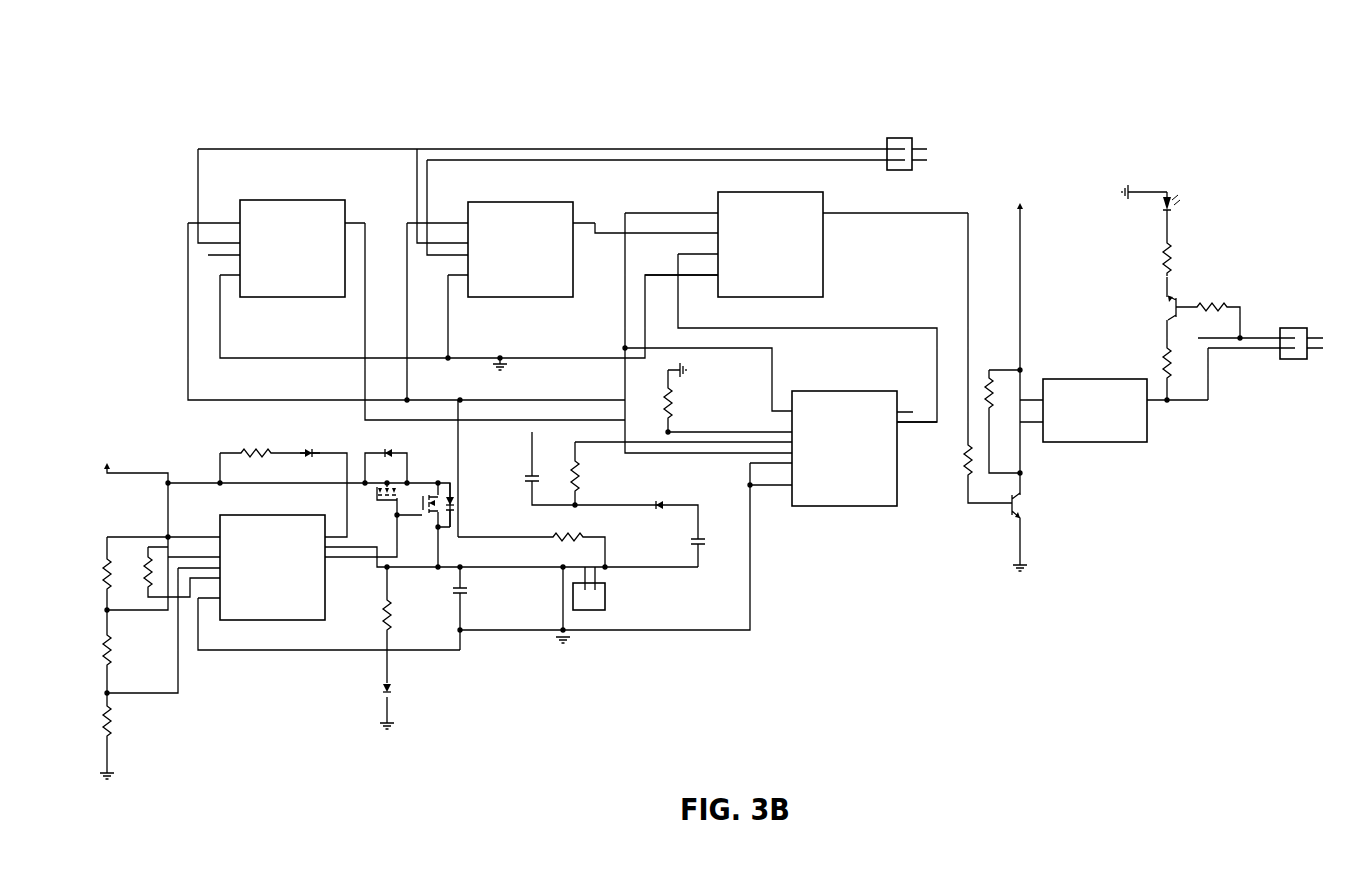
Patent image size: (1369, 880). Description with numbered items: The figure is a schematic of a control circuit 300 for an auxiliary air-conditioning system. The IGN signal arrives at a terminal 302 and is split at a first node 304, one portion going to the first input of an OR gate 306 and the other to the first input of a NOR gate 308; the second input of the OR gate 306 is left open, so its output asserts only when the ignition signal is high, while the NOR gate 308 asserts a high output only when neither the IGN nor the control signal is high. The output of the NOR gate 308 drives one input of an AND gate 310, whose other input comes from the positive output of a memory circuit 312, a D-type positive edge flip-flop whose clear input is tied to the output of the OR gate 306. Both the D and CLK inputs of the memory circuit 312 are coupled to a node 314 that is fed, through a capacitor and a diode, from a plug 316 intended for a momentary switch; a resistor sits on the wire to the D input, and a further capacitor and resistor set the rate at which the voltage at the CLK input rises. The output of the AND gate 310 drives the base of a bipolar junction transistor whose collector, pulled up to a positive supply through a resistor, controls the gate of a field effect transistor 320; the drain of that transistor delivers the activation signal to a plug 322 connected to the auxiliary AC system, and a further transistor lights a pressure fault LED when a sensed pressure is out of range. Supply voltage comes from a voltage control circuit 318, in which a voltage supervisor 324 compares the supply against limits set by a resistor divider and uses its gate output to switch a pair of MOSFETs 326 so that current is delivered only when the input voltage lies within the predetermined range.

The control circuit 300 is at (102, 217).
The terminal 302 is at (887, 138).
The first node 304 is at (417, 149).
The OR gate 306 is at (345, 200).
The NOR gate 308 is at (582, 189).
The AND gate 310 is at (777, 192).
The memory circuit 312 is at (865, 391).
The node 314 is at (575, 505).
The plug 316 is at (590, 610).
The voltage control circuit 318 is at (254, 687).
The field effect transistor 320 is at (1113, 379).
The plug 322 is at (1288, 360).
The voltage supervisor 324 is at (250, 515).
The pair of MOSFETs 326 is at (420, 486).